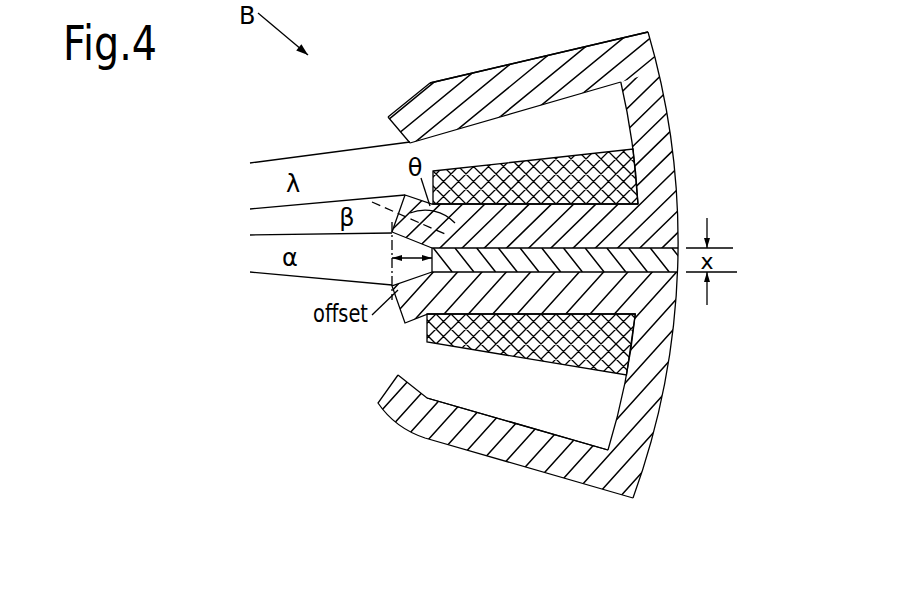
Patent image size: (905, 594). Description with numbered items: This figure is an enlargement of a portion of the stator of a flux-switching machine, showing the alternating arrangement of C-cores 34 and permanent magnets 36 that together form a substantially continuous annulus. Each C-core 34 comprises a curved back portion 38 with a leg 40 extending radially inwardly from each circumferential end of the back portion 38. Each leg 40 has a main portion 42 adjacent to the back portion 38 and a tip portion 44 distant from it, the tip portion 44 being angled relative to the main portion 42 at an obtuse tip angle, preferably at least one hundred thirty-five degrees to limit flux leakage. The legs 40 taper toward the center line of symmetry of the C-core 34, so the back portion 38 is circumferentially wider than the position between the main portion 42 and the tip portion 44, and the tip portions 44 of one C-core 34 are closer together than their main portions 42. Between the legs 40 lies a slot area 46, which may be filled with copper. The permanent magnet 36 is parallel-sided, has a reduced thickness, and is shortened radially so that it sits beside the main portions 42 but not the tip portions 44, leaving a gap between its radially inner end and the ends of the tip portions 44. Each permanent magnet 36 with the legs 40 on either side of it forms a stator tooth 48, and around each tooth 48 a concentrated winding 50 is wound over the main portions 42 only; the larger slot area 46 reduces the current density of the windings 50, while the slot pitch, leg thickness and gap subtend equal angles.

The C-core 34 is at (540, 452).
The permanent magnet 36 is at (627, 258).
The back portion 38 is at (647, 100).
The leg 40 is at (502, 88).
The main portion 42 is at (565, 72).
The tip portion 44 is at (387, 117).
The slot area 46 is at (578, 405).
The stator tooth 48 is at (678, 178).
The concentrated winding 50 is at (620, 355).